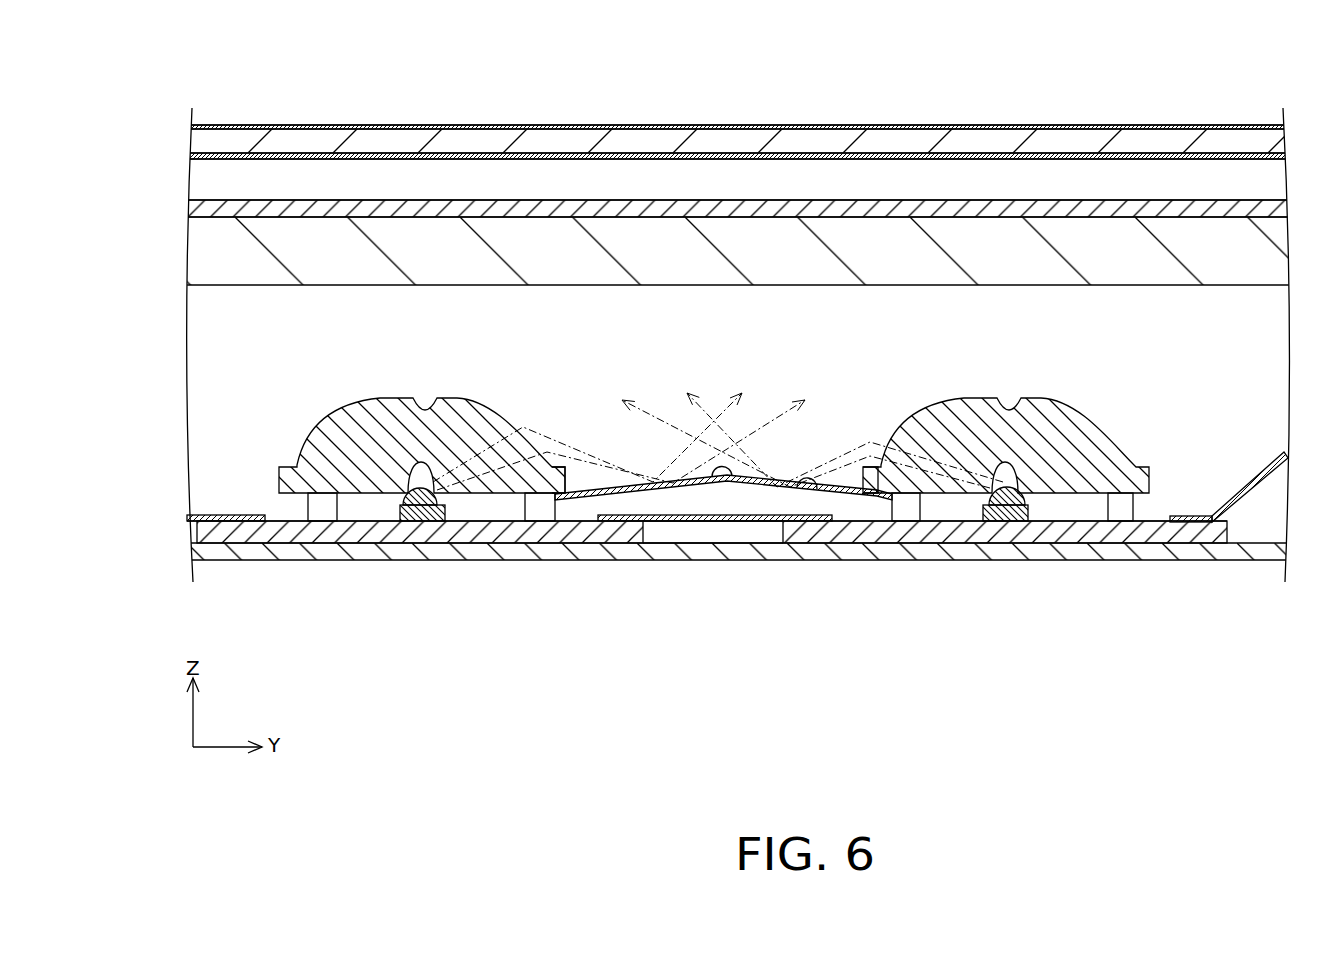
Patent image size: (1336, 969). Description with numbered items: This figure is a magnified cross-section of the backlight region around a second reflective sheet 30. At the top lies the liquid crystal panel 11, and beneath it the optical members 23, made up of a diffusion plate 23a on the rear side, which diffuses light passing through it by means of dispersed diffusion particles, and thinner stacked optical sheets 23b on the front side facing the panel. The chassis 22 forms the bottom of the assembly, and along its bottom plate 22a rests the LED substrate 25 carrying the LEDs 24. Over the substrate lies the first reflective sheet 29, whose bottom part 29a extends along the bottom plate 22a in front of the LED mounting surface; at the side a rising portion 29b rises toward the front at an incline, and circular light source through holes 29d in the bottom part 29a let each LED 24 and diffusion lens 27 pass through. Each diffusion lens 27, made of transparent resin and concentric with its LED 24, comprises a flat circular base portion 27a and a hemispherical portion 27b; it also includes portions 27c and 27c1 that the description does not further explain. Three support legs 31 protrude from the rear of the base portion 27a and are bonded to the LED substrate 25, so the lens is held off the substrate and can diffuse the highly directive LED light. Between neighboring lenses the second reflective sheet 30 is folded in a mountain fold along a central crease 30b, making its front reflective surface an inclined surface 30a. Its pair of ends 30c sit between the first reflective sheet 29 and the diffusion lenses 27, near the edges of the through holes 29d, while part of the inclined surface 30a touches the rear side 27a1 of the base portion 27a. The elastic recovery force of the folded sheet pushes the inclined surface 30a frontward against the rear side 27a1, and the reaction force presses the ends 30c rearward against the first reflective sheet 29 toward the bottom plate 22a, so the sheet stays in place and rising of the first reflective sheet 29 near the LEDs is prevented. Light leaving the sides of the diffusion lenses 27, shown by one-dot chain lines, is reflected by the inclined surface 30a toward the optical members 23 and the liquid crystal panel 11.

The liquid crystal panel 11 is at (236, 143).
The chassis 22 is at (740, 592).
The bottom plate 22a is at (1193, 551).
The optical members 23 is at (740, 159).
The diffusion plate 23a is at (738, 247).
The optical sheets 23b is at (699, 210).
The LED 24 is at (420, 512).
The LED substrate 25 is at (390, 526).
The diffusion lens 27 is at (714, 322).
The base portion 27a is at (557, 478).
The rear side of the base portion 27a1 is at (561, 492).
The lens body 27b is at (477, 430).
The light entrance recess 27c is at (410, 460).
The lens flange protrusion 27c1 is at (877, 496).
The first reflective sheet 29 is at (737, 547).
The bottom part 29a is at (707, 578).
The rising portion 29b is at (1255, 486).
The light source through hole 29d is at (263, 522).
The second reflective sheet 30 is at (723, 539).
The inclined surface 30a is at (817, 494).
The crease 30b is at (731, 480).
The ends 30c is at (470, 519).
The support legs 31 is at (339, 522).